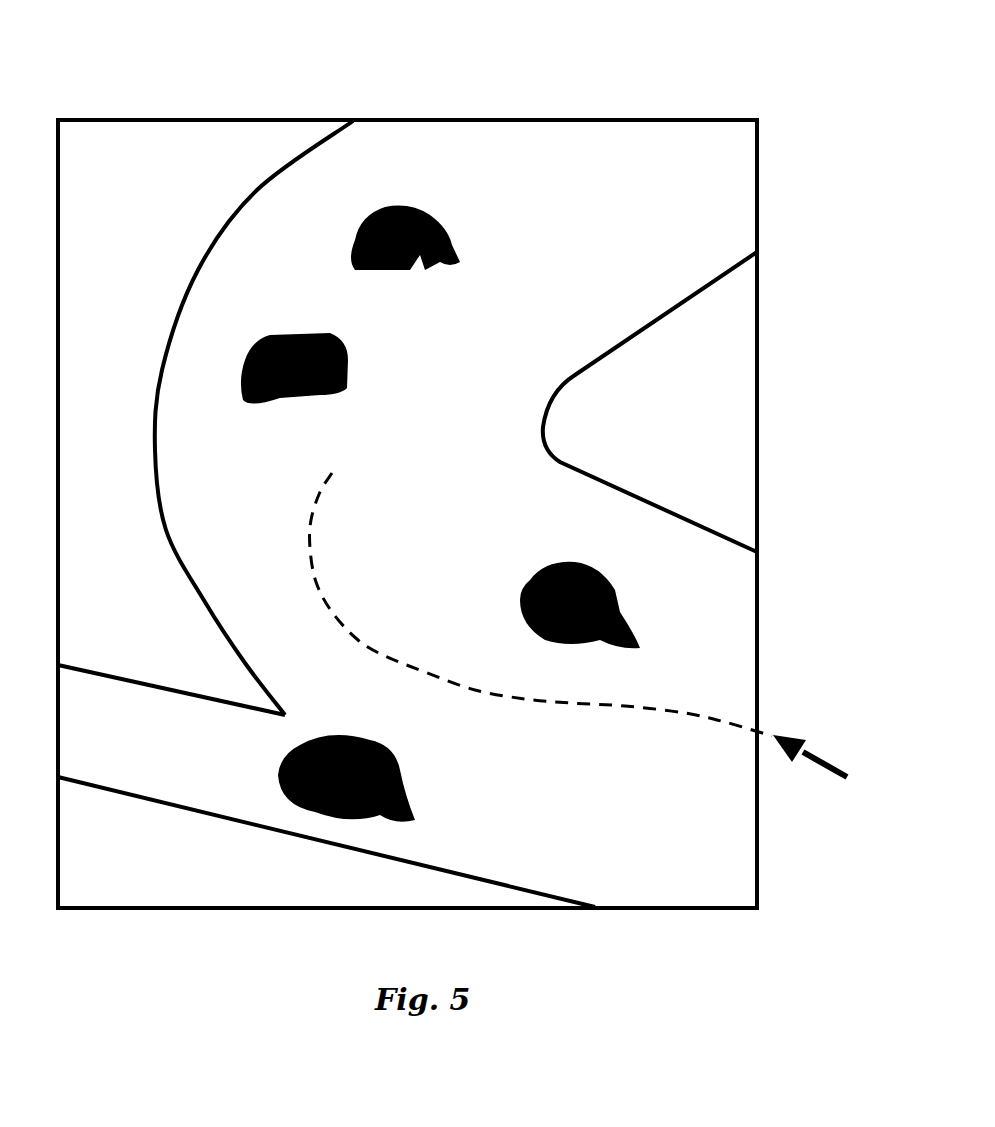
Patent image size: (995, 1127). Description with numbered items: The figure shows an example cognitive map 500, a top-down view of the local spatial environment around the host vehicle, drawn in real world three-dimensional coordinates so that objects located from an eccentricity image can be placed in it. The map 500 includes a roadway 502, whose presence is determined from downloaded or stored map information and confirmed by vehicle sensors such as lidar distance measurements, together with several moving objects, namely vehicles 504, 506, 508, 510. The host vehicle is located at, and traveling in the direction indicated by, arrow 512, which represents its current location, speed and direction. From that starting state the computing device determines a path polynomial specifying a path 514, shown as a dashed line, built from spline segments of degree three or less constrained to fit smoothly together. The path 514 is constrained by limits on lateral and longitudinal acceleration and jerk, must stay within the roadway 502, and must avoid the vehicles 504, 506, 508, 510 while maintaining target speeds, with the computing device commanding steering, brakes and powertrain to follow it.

The cognitive map 500 is at (414, 37).
The roadway 502 is at (571, 150).
The vehicle 504 is at (325, 813).
The vehicle 506 is at (625, 613).
The vehicle 508 is at (427, 213).
The vehicle 510 is at (273, 333).
The arrow 512 is at (828, 774).
The path 514 is at (690, 710).